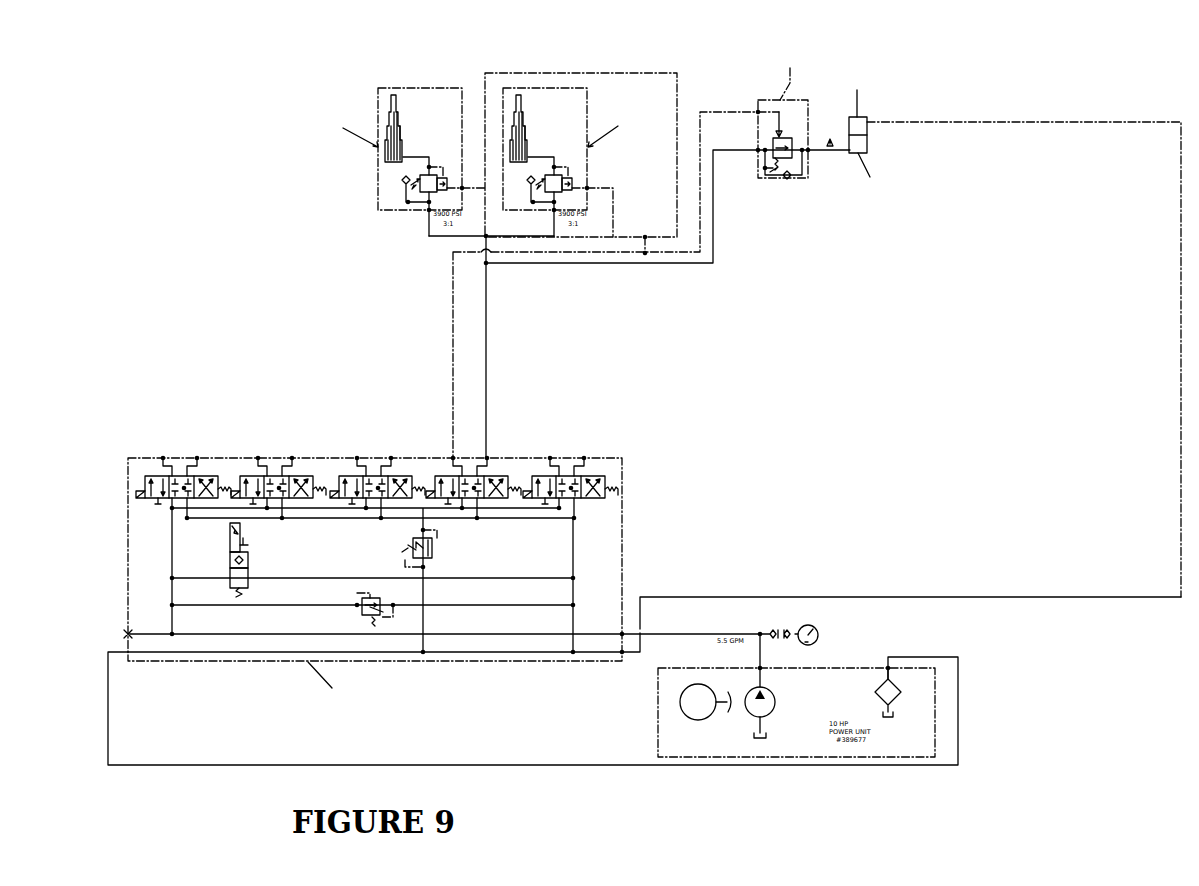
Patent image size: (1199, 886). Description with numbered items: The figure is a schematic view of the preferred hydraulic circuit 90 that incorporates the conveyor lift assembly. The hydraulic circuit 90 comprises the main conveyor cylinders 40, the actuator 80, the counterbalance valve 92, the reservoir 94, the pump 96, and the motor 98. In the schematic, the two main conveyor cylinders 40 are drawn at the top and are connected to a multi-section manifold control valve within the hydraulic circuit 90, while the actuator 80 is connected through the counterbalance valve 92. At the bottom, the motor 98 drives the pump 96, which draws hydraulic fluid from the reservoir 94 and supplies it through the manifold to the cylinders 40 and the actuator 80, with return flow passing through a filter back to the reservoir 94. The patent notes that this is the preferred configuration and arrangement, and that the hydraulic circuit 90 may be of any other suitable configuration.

The main conveyor cylinders 40 is at (378, 117).
The actuator 80 is at (865, 118).
The hydraulic circuit 90 is at (357, 358).
The counterbalance valve 92 is at (808, 178).
The reservoir 94 is at (893, 718).
The pump 96 is at (772, 713).
The motor 98 is at (680, 704).